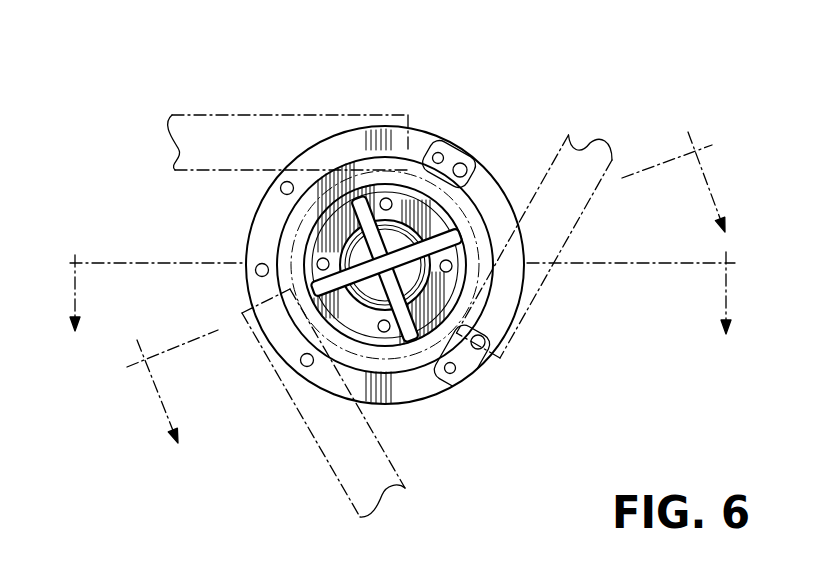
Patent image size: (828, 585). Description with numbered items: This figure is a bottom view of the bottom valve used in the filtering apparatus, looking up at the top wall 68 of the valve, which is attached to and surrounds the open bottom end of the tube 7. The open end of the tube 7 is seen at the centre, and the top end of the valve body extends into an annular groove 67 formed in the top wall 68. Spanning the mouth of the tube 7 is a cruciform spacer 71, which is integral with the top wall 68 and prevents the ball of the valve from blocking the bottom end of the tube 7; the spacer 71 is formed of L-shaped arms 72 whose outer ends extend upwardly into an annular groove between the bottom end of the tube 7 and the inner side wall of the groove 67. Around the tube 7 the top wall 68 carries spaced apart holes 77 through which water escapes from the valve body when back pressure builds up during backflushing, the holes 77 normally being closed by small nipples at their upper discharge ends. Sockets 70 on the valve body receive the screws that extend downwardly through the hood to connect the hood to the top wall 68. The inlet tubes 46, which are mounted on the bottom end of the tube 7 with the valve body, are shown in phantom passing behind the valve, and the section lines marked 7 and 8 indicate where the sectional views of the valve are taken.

The tube 7 is at (290, 432).
The section line 8- 8 is at (402, 293).
The inlet tubes 46 is at (232, 113).
The annular groove 67 is at (458, 203).
The top wall 68 is at (257, 222).
The sockets 70 is at (440, 137).
The cruciform spacer 71 is at (348, 192).
The L-shaped arms 72 is at (402, 275).
The holes 77 is at (318, 262).